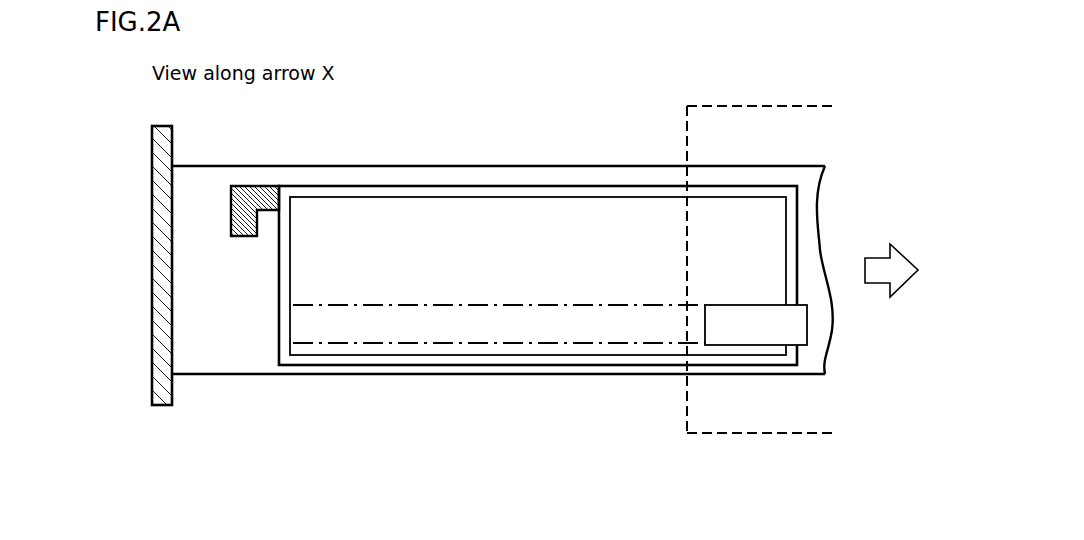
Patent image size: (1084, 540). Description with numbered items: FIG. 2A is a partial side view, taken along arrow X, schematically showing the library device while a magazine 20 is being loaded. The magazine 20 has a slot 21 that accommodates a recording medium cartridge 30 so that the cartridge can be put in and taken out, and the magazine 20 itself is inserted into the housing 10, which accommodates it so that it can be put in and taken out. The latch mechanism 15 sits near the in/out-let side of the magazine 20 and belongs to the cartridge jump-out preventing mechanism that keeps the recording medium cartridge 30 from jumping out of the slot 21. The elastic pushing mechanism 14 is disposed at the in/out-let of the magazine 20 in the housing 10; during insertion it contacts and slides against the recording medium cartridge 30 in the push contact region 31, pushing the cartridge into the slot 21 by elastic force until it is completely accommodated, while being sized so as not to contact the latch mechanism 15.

The housing 10 is at (783, 106).
The elastic pushing mechanism 14 is at (760, 330).
The latch mechanism 15 is at (246, 195).
The magazine 20 is at (590, 165).
The slot 21 is at (455, 185).
The recording medium cartridge 30 is at (372, 218).
The push contact region 31 is at (461, 343).